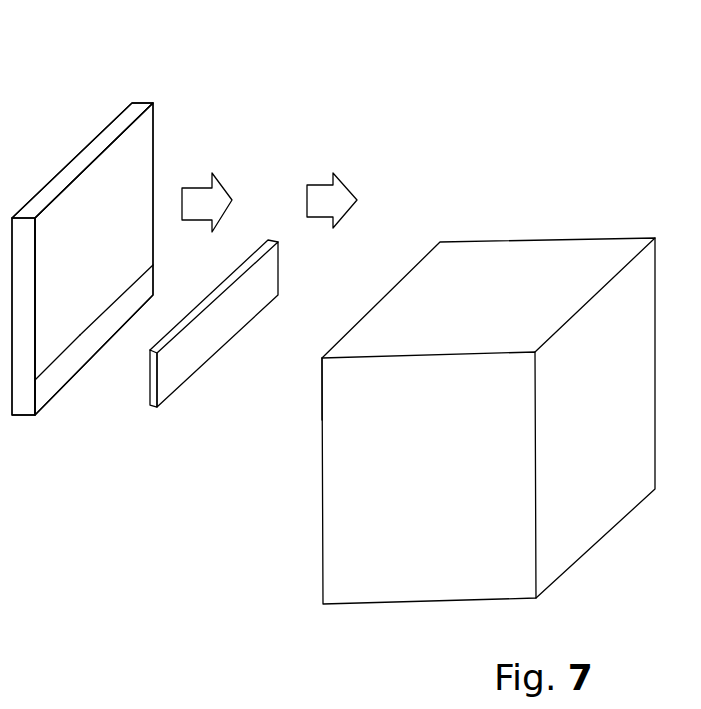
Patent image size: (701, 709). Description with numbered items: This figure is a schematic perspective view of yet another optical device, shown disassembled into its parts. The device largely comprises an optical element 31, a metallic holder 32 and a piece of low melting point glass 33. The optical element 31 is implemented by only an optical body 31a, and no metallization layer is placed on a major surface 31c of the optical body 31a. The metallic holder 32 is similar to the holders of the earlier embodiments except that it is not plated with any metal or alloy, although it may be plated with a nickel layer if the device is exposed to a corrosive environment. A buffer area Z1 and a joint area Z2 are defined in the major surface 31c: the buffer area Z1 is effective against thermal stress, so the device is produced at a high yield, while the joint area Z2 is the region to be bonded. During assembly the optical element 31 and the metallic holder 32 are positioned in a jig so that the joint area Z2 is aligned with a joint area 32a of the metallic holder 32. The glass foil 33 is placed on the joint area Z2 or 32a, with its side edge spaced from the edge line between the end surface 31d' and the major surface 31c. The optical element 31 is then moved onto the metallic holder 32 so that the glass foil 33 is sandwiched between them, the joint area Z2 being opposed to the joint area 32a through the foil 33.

The optical element 31 is at (158, 93).
The optical body 31a is at (87, 140).
The major surface 31c is at (122, 223).
The end surface 31d' is at (41, 347).
The buffer area Z1 is at (45, 395).
The joint area Z2 is at (80, 327).
The piece of low melting point glass 33 is at (203, 345).
The metallic holder 32 is at (533, 237).
The joint area 32a is at (313, 377).